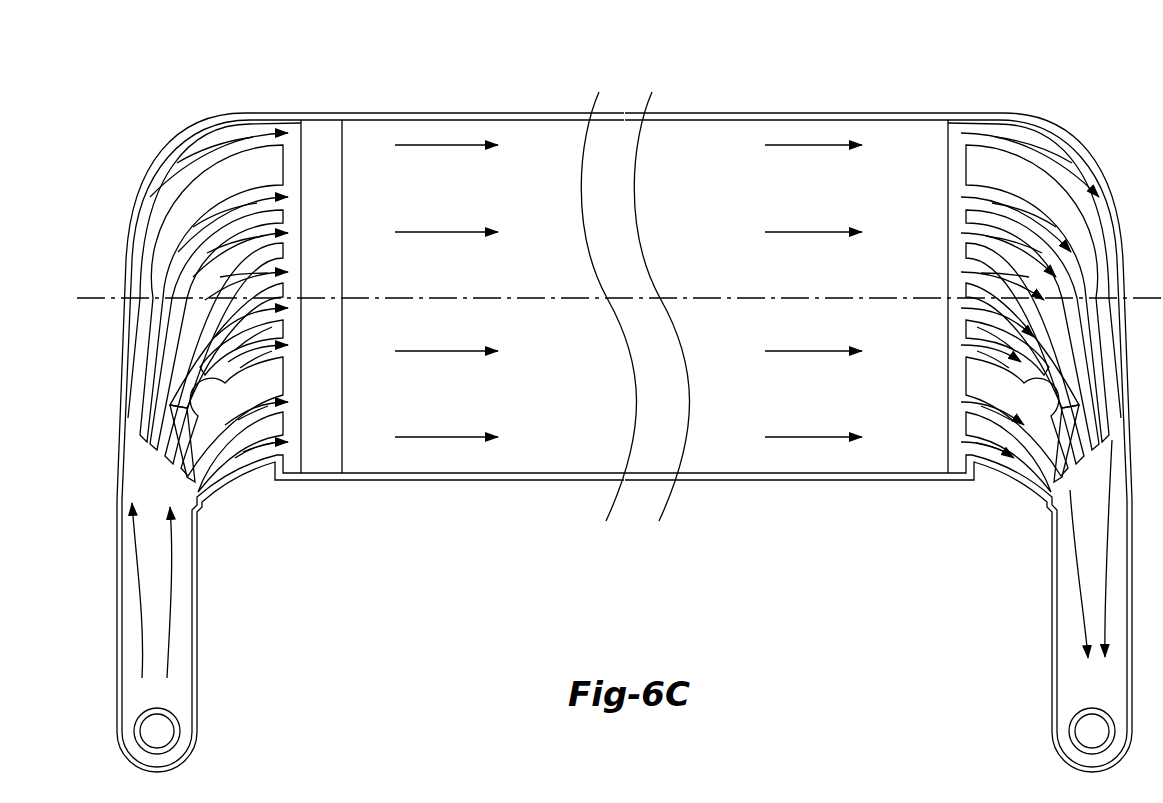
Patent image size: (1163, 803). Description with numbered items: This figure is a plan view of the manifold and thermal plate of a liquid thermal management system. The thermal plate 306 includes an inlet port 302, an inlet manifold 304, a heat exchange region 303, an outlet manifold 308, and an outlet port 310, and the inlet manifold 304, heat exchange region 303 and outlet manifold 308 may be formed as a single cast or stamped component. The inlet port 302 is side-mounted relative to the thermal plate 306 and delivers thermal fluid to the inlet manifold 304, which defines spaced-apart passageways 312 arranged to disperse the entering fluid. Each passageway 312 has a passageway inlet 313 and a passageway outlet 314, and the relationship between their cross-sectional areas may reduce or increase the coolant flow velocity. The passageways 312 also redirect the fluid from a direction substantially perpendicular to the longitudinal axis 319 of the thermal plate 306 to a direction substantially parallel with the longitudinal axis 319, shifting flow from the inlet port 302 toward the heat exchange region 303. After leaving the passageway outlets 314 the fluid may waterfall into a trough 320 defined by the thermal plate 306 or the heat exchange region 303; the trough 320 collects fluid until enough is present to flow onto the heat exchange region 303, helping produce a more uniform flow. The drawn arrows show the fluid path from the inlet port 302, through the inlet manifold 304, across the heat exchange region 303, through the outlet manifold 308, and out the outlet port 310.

The inlet port 302 is at (182, 731).
The heat exchange region 303 is at (533, 162).
The inlet manifold 304 is at (197, 195).
The thermal plate 306 is at (284, 36).
The outlet manifold 308 is at (1044, 192).
The outlet port 310 is at (1090, 731).
The passageways 312 is at (175, 305).
The passageway inlet 313 is at (157, 462).
The passageway outlet 314 is at (283, 225).
The longitudinal axis 319 is at (96, 297).
The trough 320 is at (322, 140).